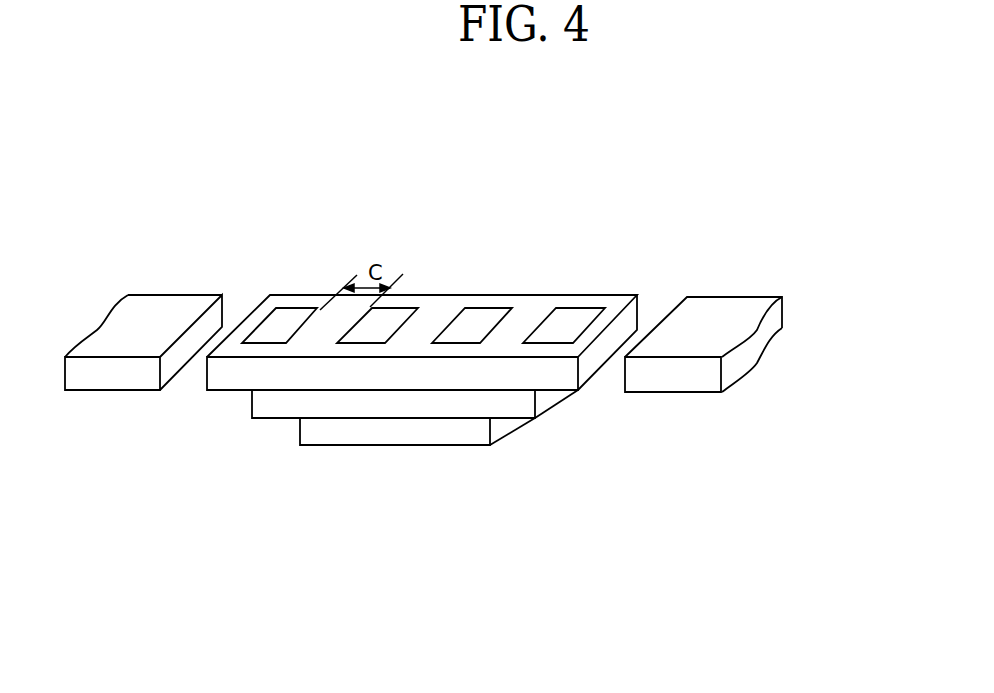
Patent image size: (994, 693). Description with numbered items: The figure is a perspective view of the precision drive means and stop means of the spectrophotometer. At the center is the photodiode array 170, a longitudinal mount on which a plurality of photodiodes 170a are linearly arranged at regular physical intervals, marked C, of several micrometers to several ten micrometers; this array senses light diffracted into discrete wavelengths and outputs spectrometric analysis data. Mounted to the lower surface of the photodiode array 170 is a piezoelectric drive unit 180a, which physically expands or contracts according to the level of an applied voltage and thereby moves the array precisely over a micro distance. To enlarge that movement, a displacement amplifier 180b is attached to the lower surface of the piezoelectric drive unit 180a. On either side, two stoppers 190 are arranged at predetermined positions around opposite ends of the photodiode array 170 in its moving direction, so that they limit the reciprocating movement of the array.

The photodiode array 170 is at (583, 295).
The photodiodes 170a is at (478, 308).
The piezoelectric drive unit 180a is at (265, 420).
The displacement amplifier 180b is at (359, 445).
The stoppers 190 is at (715, 297).